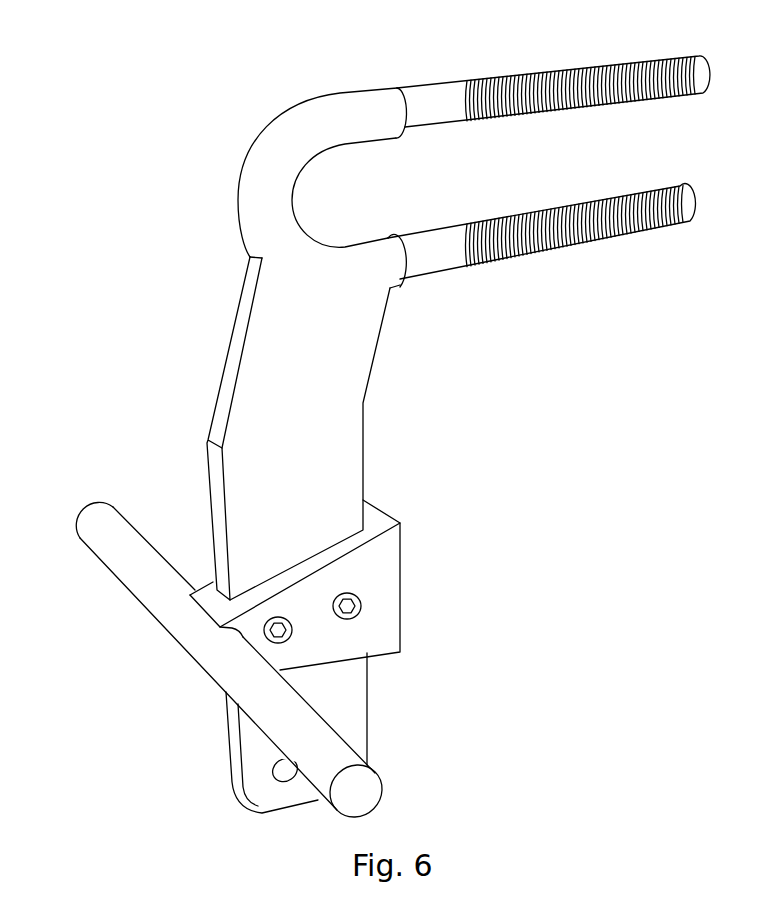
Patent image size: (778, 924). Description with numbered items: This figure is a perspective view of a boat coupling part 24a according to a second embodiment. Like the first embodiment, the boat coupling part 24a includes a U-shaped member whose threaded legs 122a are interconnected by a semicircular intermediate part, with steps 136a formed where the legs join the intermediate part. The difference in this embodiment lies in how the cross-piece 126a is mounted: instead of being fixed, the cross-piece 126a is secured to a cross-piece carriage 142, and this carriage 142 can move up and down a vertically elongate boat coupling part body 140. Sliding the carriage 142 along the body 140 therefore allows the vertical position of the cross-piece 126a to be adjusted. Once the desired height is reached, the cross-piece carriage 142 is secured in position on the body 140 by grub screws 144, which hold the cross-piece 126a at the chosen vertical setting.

The boat coupling part 24a is at (160, 151).
The threaded legs 122a is at (604, 64).
The steps 136a is at (400, 88).
The boat coupling part body 140 is at (283, 372).
The cross-piece carriage 142 is at (380, 571).
The grub screws 144 is at (362, 609).
The cross-piece 126a is at (145, 570).